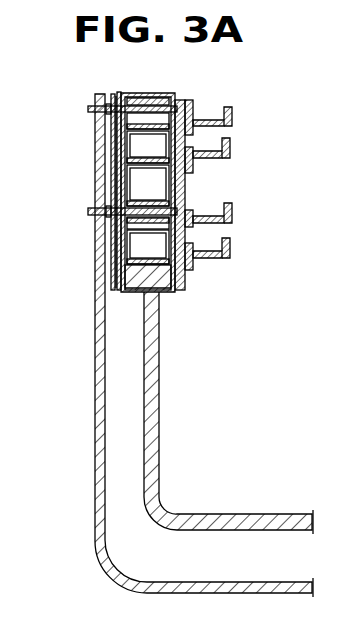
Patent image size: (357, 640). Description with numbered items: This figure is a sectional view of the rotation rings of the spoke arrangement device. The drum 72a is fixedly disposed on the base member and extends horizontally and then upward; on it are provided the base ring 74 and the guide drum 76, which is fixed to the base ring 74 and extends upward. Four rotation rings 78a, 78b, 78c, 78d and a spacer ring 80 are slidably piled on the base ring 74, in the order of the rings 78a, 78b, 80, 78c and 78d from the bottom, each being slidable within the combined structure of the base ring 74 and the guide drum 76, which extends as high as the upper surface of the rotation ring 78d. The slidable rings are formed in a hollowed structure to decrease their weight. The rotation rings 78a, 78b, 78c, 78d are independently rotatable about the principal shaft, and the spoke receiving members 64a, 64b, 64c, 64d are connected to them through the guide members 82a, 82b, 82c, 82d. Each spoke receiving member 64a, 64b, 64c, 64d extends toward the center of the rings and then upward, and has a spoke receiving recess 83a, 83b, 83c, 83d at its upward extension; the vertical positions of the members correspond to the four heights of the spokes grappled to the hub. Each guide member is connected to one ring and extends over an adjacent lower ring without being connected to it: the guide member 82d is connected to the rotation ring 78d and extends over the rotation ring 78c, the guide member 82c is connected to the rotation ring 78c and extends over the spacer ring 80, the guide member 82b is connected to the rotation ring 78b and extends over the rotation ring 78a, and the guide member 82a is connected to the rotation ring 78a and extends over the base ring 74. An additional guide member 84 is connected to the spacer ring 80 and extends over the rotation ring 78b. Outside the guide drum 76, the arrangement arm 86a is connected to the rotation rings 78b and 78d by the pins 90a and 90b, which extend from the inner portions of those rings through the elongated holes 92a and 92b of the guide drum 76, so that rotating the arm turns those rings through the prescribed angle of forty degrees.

The spoke receiving member 64a is at (230, 257).
The spoke receiving member 64b is at (232, 222).
The spoke receiving member 64c is at (230, 153).
The spoke receiving member 64d is at (232, 121).
The drum 72a is at (157, 412).
The base ring 74 is at (136, 288).
The guide drum 76 is at (104, 279).
The rotation ring 78a is at (113, 256).
The rotation ring 78b is at (117, 239).
The rotation ring 78c is at (121, 148).
The rotation ring 78d is at (146, 100).
The spacer ring 80 is at (116, 176).
The guide member 82a is at (180, 273).
The guide member 82b is at (192, 240).
The guide member 82c is at (190, 160).
The guide member 82d is at (189, 106).
The spoke receiving recess 83a is at (230, 245).
The spoke receiving recess 83b is at (232, 210).
The spoke receiving recess 83c is at (230, 139).
The spoke receiving recess 83d is at (231, 107).
The additional guide member 84 is at (188, 198).
The arrangement arm 86a is at (96, 397).
The pin 90a is at (90, 211).
The pin 90b is at (90, 109).
The elongated hole 92a is at (106, 226).
The elongated hole 92b is at (106, 130).